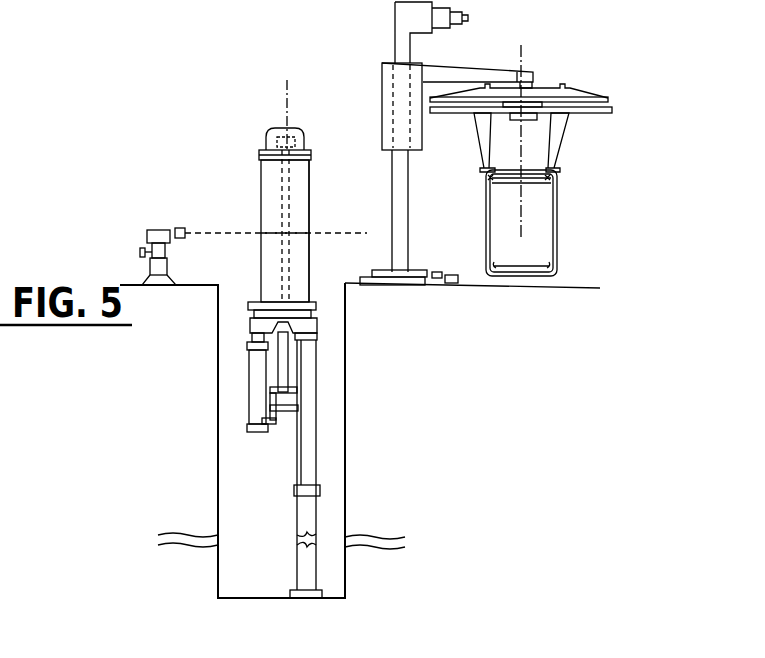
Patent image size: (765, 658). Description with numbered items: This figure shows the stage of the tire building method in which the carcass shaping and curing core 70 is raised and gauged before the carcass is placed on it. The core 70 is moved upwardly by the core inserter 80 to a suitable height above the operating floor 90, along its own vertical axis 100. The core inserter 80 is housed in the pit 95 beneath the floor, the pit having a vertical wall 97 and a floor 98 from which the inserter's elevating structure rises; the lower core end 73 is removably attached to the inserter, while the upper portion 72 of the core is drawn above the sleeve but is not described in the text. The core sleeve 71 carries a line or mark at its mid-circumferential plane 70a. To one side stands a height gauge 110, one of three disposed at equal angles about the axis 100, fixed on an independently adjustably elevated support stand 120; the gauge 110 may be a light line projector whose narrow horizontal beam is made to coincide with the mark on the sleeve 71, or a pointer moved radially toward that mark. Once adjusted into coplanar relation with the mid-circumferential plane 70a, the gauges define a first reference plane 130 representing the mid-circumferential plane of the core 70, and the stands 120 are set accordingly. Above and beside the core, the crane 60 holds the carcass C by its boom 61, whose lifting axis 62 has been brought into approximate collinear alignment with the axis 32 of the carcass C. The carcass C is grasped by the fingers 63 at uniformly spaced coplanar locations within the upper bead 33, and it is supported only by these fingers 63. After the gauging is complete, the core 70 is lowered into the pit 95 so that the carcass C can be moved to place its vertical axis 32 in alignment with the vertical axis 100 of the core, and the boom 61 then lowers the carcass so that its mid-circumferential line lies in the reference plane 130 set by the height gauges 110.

The axis of the carcass 32 is at (518, 43).
The lifting axis 62 is at (521, 102).
The crane 60 is at (486, 142).
The boom 61 is at (495, 76).
The fingers 63 is at (486, 167).
The tire bead 33 is at (491, 178).
The carcass C is at (558, 232).
The operating floor 90 is at (585, 288).
The carcass shaping and curing core 70 is at (276, 215).
The mid-circumferential plane of the core sleeve 70a is at (271, 233).
The core sleeve 71 is at (298, 270).
The cylinder cap/valve 72 is at (261, 159).
The lower core end 73 is at (314, 303).
The core inserter 80 is at (318, 392).
The pit 95 is at (255, 492).
The vertical wall of the pit 97 is at (345, 455).
The floor of the pit 98 is at (252, 597).
The vertical axis of the core 100 is at (287, 104).
The height gauge 110 is at (168, 226).
The support stand 120 is at (137, 237).
The first reference plane 130 is at (326, 232).